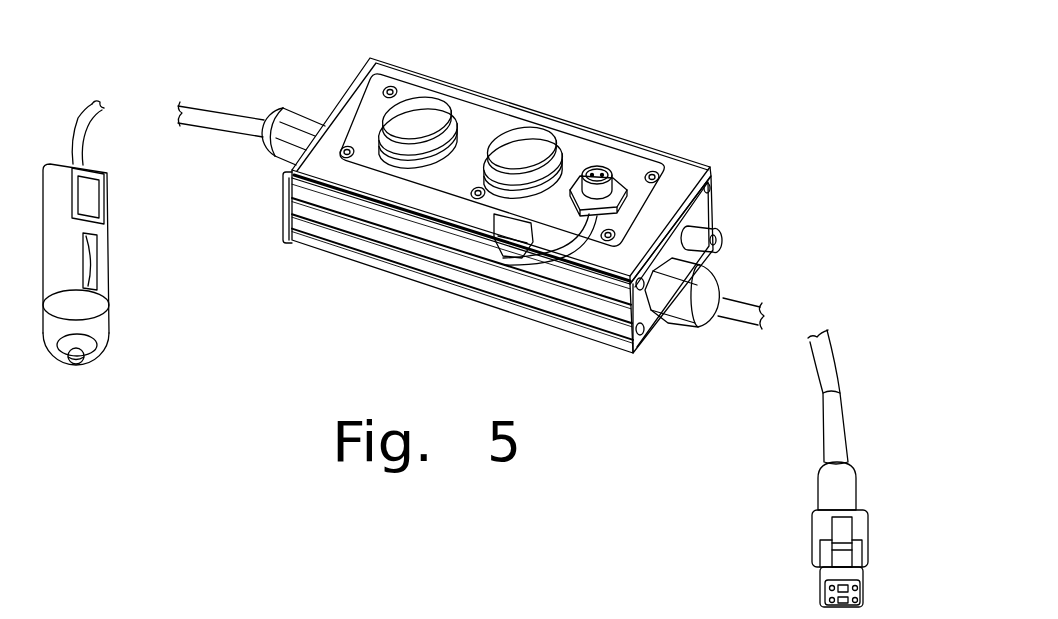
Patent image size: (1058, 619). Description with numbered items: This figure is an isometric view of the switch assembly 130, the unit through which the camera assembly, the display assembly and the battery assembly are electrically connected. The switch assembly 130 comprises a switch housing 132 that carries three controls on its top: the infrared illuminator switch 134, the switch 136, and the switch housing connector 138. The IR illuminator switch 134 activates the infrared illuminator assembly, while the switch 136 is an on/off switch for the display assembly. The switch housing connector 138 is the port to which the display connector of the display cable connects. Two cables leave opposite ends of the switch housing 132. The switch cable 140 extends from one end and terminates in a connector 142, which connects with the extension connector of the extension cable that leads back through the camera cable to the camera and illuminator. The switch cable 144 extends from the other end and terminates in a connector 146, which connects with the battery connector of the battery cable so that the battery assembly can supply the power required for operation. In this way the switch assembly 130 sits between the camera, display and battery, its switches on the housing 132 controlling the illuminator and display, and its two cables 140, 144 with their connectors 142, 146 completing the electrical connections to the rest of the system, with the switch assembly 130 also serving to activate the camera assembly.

The switch assembly 130 is at (702, 95).
The switch housing 132 is at (677, 193).
The infrared (IR) illuminator switch 134 is at (418, 112).
The switch 136 is at (523, 143).
The switch housing connector 138 is at (596, 162).
The switch cable 140 is at (213, 115).
The connector 142 is at (97, 300).
The switch cable 144 is at (733, 317).
The connector 146 is at (862, 532).